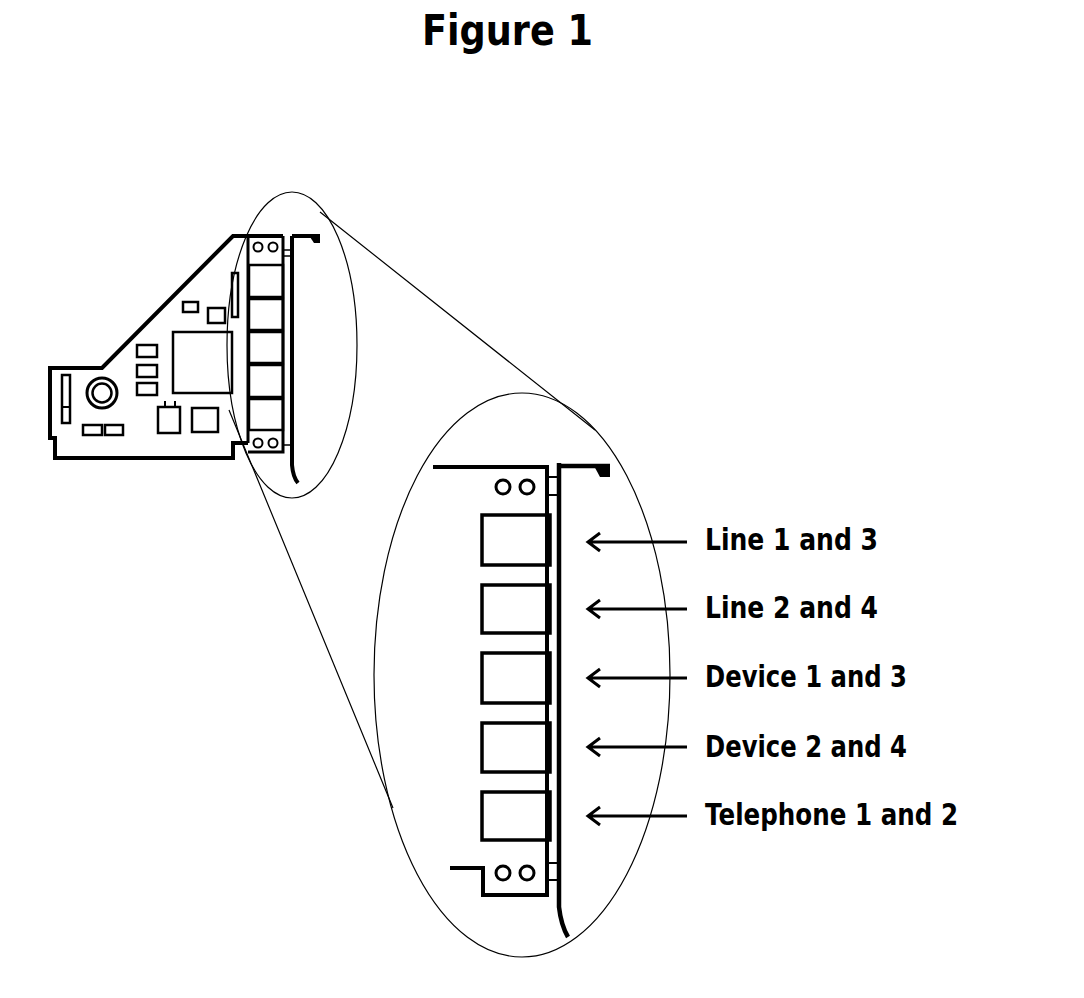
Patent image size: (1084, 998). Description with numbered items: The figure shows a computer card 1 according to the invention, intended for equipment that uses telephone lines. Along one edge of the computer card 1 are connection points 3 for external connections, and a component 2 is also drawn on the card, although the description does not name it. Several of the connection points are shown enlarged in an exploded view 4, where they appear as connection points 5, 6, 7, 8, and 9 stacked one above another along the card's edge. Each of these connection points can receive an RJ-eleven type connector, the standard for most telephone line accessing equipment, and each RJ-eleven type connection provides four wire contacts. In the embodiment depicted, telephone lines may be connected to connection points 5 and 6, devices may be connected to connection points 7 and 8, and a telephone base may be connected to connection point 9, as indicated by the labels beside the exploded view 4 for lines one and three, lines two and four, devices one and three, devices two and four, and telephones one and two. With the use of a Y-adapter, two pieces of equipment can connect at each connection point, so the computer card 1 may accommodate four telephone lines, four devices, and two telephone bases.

The computer card 1 is at (152, 316).
The connector jack 2 is at (90, 373).
The connection points 3 is at (287, 192).
The exploded view 4 is at (595, 430).
The connection point 5 is at (482, 543).
The connection point 6 is at (482, 612).
The connection point 7 is at (482, 680).
The connection point 8 is at (482, 748).
The connection point 9 is at (482, 817).